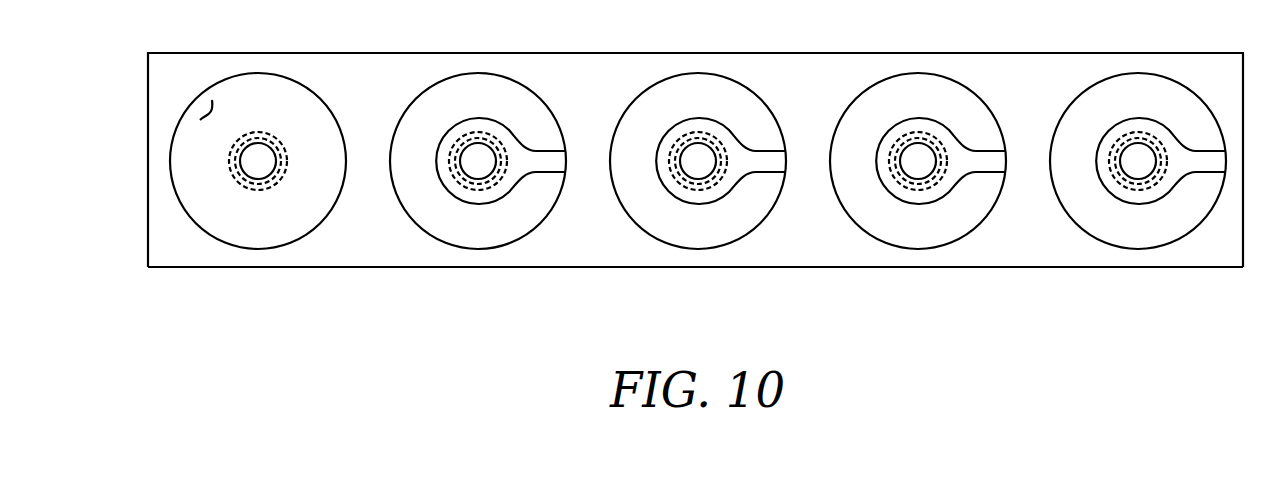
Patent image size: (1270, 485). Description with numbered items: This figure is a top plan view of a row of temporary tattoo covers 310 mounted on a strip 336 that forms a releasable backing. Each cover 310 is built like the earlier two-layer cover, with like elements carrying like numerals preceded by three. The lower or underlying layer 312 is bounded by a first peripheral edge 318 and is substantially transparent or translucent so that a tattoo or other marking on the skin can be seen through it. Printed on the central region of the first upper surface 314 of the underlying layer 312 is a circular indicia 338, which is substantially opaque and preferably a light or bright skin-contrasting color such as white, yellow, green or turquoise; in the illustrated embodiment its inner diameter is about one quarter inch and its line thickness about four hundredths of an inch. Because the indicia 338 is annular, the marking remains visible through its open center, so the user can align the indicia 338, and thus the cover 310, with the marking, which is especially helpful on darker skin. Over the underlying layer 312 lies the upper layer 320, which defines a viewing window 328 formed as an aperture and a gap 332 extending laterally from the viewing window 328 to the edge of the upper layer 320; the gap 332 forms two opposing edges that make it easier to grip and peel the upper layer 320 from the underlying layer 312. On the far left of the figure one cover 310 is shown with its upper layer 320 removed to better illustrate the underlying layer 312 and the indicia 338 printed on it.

The cover 310 is at (670, 168).
The underlying layer 312 is at (257, 250).
The first upper surface 314 is at (205, 108).
The first peripheral edge 318 is at (197, 221).
The upper layer 320 is at (436, 100).
The viewing window 328 is at (450, 188).
The gap 332 is at (542, 162).
The strip 336 is at (350, 253).
The circular indicia 338 is at (229, 161).